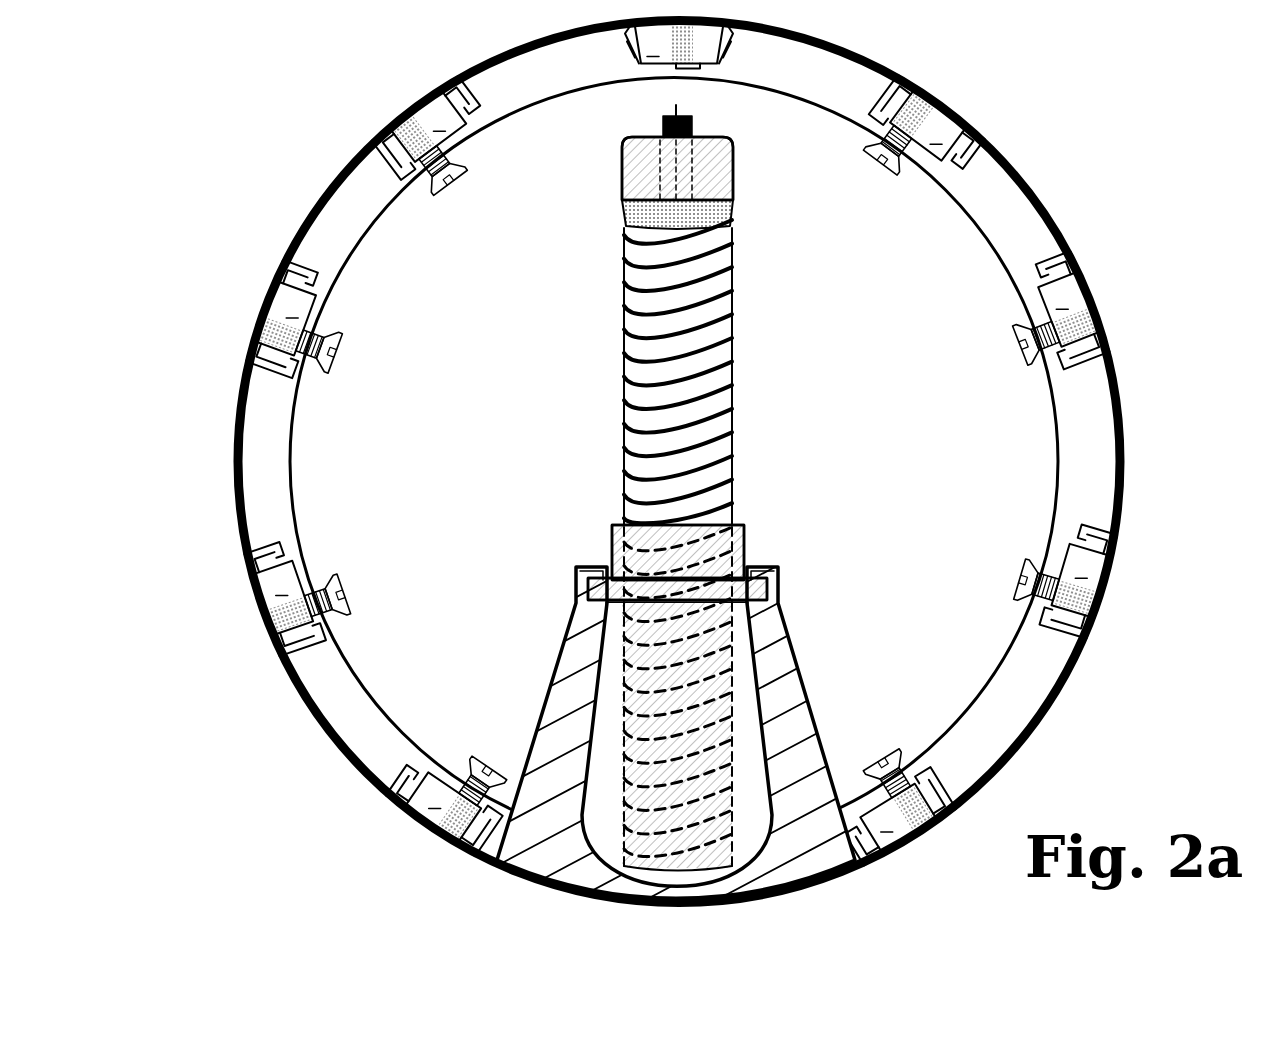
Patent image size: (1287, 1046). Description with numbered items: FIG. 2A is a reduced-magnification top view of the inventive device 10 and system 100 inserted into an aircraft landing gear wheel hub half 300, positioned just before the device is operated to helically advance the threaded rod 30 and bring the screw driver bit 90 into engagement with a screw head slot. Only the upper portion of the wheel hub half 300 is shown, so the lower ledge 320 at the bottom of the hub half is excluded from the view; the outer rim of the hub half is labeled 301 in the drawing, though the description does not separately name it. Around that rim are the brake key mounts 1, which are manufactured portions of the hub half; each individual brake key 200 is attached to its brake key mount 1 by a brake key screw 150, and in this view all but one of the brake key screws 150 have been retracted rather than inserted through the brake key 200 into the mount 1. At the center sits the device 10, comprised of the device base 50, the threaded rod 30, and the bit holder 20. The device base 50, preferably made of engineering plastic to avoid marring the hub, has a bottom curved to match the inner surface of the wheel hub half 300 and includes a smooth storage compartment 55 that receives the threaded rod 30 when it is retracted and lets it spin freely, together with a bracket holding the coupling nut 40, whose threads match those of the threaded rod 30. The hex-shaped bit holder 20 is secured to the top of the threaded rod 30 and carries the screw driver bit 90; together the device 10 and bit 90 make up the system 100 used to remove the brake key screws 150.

The brake key mount 1 is at (681, 437).
The device 10 is at (502, 374).
The bit holder 20 is at (621, 167).
The threaded rod 30 is at (742, 386).
The coupling nut 40 is at (742, 520).
The device base 50 is at (643, 726).
The storage compartment 55 is at (805, 687).
The screw driver bit 90 is at (728, 100).
The system 100 is at (476, 272).
The brake key screw 150 is at (662, 90).
The brake key 200 is at (630, 48).
The wheel hub half 300 is at (708, 462).
The outer ring 301 is at (283, 221).
The lower ledge 320 is at (1078, 468).